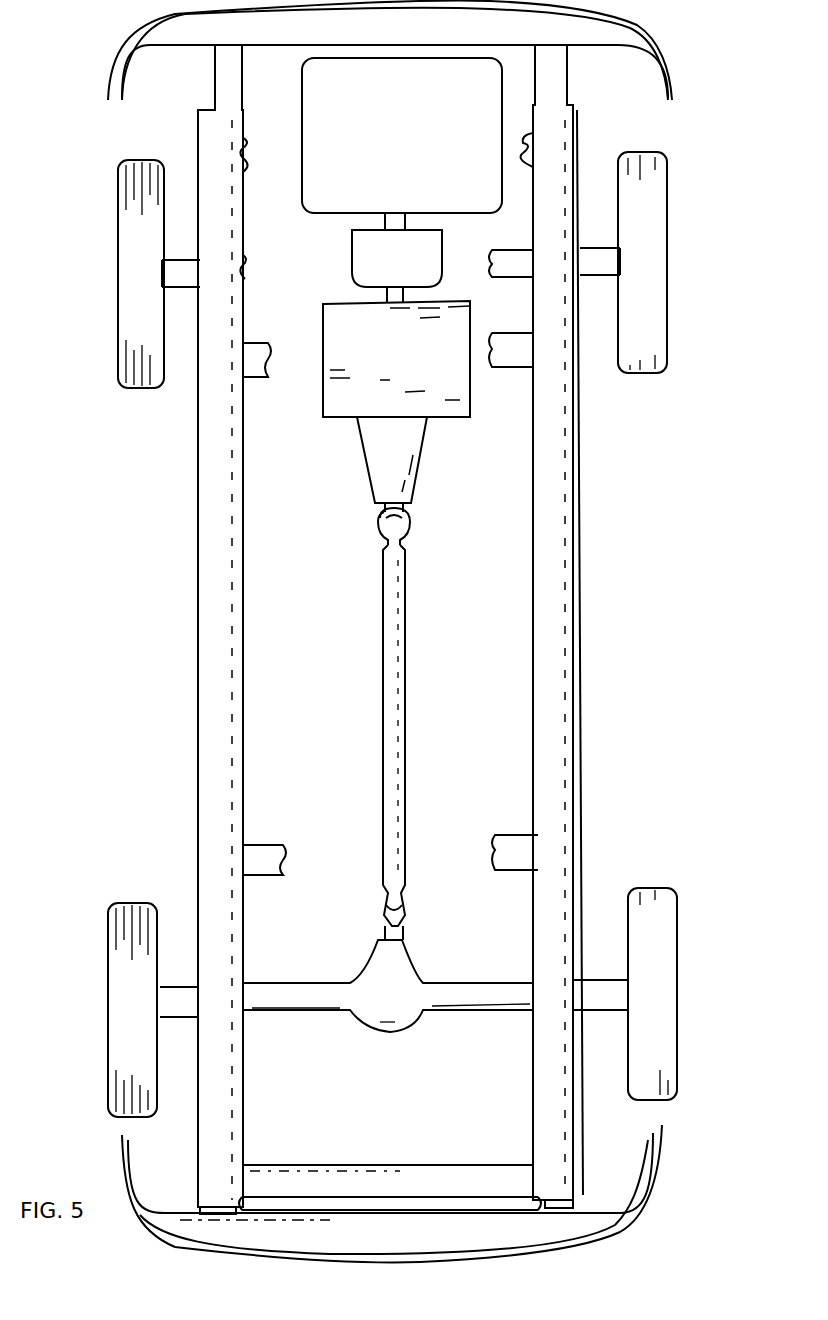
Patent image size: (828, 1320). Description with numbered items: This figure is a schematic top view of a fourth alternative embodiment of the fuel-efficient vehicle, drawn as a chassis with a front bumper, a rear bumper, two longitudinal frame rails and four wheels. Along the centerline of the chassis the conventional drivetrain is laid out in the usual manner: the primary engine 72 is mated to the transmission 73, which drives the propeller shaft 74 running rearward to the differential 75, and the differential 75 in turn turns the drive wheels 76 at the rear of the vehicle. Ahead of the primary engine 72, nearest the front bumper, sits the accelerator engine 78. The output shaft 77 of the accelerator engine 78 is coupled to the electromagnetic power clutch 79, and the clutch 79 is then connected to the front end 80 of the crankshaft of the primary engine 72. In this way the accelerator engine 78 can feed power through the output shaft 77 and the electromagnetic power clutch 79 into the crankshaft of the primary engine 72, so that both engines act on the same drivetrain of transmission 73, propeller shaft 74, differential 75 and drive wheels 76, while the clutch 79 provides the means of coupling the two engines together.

The primary engine 72 is at (376, 356).
The transmission 73 is at (376, 456).
The propeller shaft 74 is at (408, 712).
The differential 75 is at (380, 1011).
The drive wheels 76 is at (108, 960).
The output shaft 77 is at (410, 219).
The accelerator engine 78 is at (376, 144).
The electromagnetic power clutch 79 is at (352, 258).
The front end of the crankshaft 80 is at (410, 295).